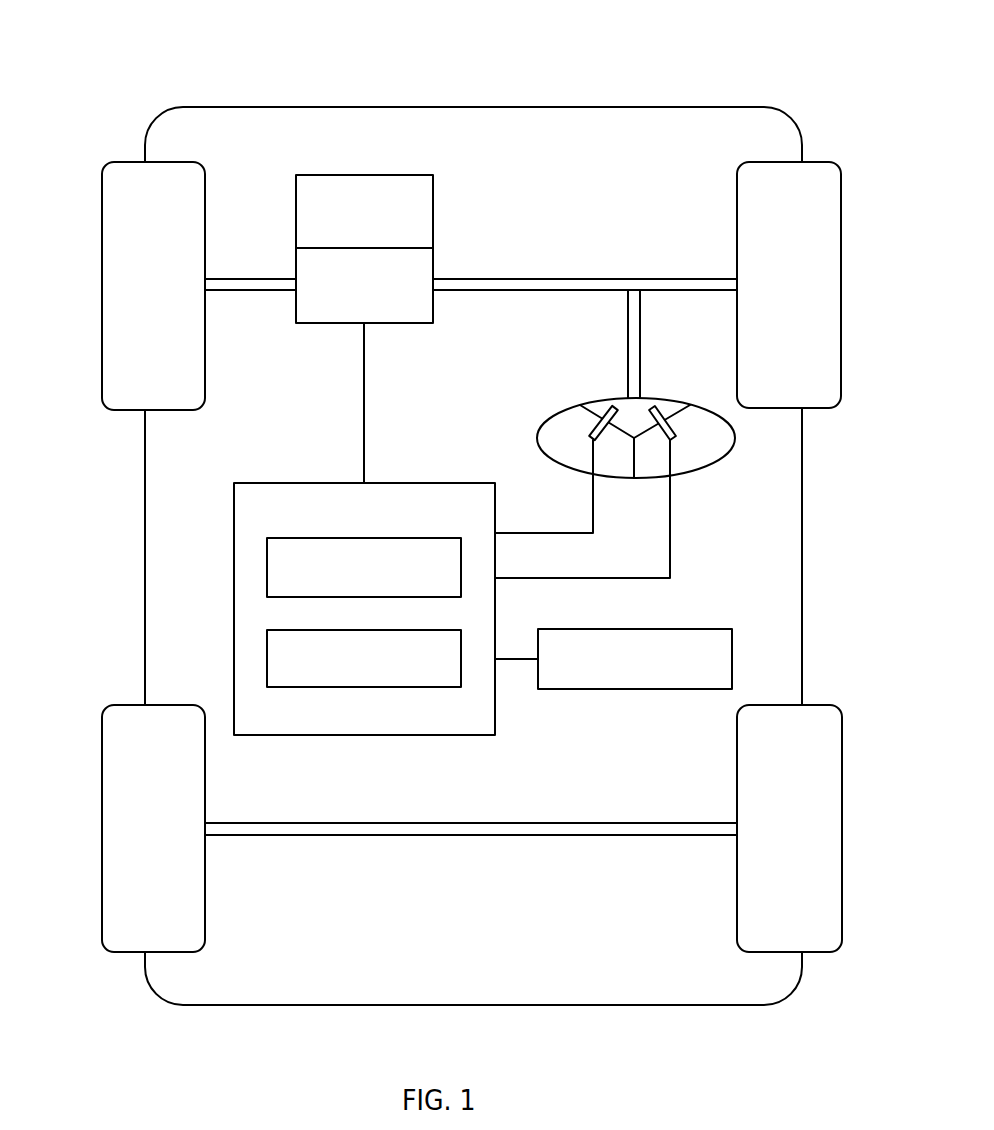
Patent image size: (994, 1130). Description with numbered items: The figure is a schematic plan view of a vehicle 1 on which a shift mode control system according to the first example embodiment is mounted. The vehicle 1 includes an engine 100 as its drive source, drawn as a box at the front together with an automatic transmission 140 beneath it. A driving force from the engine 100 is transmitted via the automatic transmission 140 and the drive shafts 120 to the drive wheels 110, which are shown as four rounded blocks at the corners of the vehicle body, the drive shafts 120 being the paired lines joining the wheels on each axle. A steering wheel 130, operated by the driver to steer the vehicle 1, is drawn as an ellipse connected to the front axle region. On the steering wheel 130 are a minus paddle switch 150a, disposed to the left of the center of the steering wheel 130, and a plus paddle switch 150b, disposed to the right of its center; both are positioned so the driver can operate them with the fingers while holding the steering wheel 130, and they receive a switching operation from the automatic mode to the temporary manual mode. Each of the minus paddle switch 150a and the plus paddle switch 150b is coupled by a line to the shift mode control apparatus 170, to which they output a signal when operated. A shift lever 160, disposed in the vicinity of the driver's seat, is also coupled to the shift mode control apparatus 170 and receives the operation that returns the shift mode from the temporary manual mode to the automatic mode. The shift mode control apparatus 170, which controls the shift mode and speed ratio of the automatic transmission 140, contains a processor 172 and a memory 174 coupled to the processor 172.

The vehicle 1 is at (181, 68).
The drive wheels 110 is at (102, 208).
The drive shafts 120 is at (222, 279).
The engine 100 is at (434, 195).
The automatic transmission 140 is at (434, 257).
The steering wheel 130 is at (538, 436).
The minus paddle switch 150a is at (585, 405).
The plus paddle switch 150b is at (713, 392).
The shift lever 160 is at (632, 690).
The shift mode control apparatus 170 is at (270, 484).
The processor 172 is at (278, 538).
The memory 174 is at (287, 689).